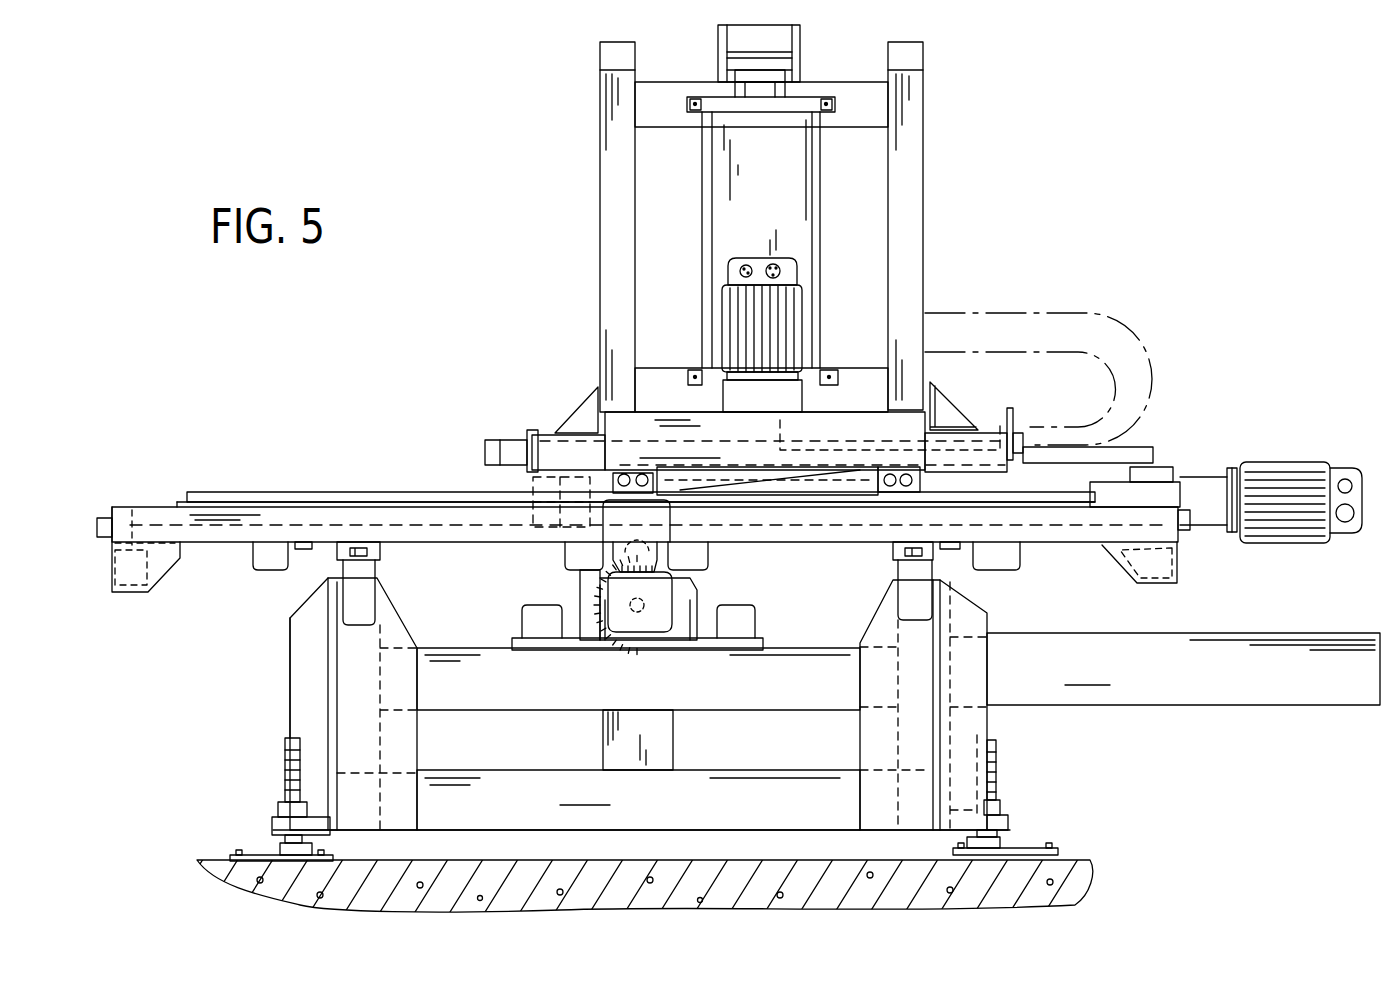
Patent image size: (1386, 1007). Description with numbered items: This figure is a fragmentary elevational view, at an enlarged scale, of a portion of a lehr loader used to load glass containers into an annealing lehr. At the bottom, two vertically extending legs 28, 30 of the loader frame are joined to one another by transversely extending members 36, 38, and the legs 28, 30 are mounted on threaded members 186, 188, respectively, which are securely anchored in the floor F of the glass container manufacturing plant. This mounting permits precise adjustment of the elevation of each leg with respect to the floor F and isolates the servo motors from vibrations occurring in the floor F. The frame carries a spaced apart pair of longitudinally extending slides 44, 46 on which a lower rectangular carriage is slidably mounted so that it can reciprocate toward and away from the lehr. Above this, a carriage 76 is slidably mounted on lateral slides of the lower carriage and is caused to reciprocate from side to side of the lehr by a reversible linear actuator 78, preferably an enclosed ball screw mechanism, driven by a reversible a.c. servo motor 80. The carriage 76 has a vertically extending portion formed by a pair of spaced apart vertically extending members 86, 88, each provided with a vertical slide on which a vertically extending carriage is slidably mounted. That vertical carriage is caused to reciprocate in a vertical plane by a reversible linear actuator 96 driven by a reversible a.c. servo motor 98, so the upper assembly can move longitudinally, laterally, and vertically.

The leg 28 is at (310, 708).
The leg 30 is at (968, 718).
The transversely extending member 36 is at (825, 660).
The transversely extending member 38 is at (812, 745).
The longitudinally extending slide 44 is at (330, 553).
The longitudinally extending slide 46 is at (937, 548).
The carriage 76 is at (568, 440).
The reversible linear actuator 78 is at (1198, 490).
The servo motor 80 is at (1262, 470).
The vertically extending member 86 is at (613, 290).
The vertically extending member 88 is at (908, 228).
The reversible linear actuator 96 is at (795, 213).
The reversible a.c. servo motor 98 is at (782, 318).
The threaded member 186 is at (285, 790).
The threaded member 188 is at (1000, 778).
The floor F is at (1080, 862).